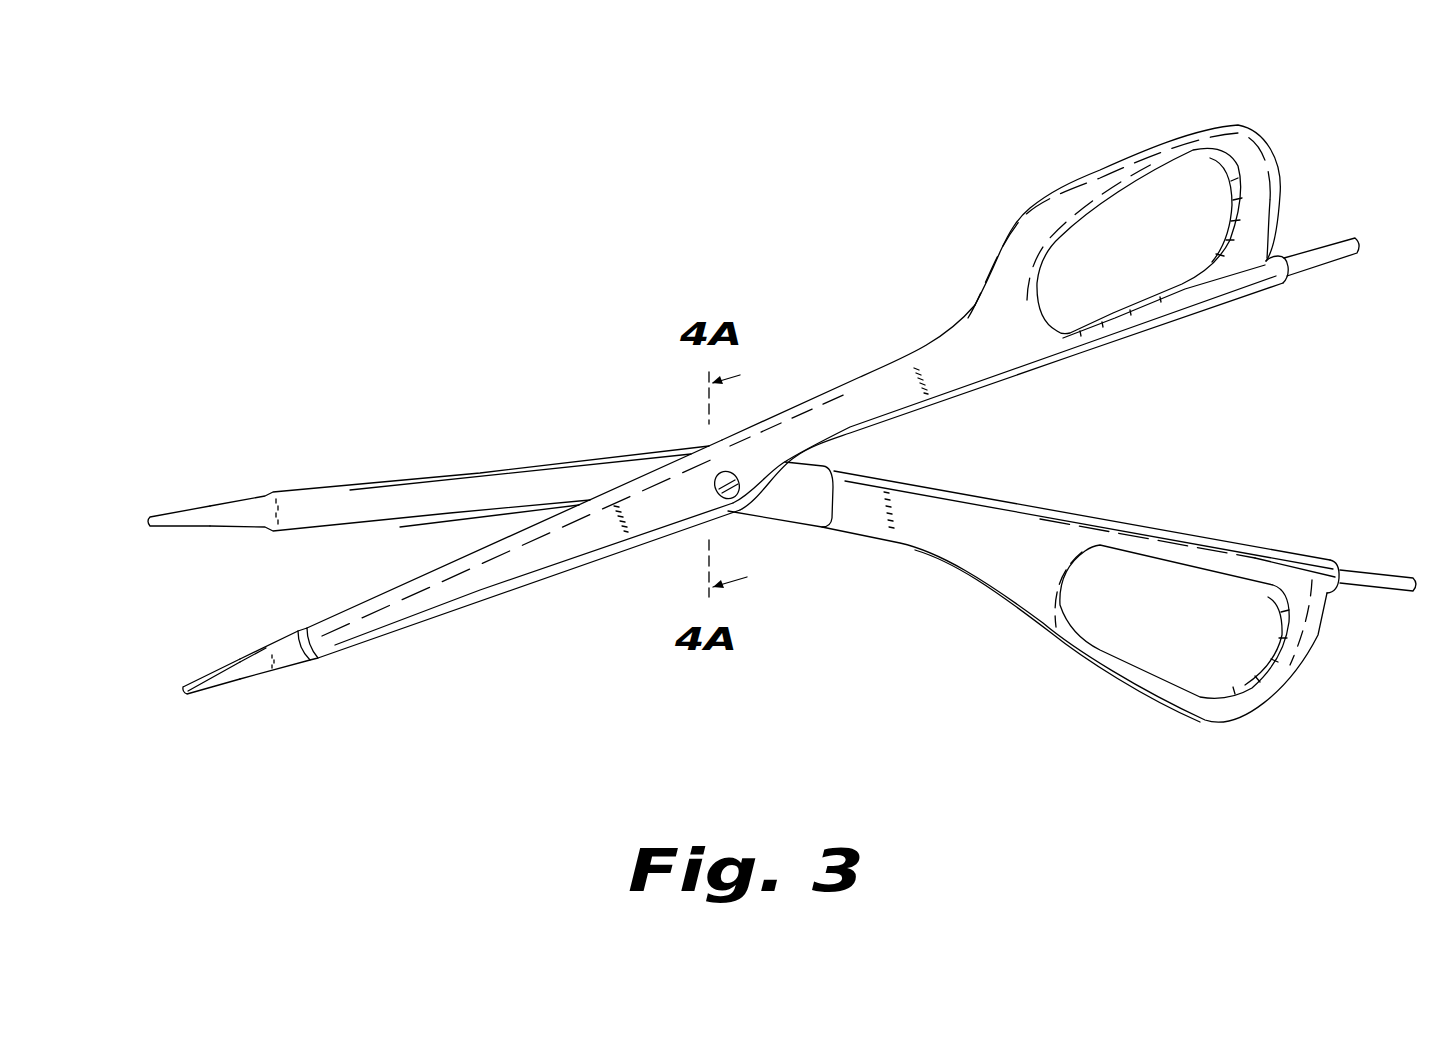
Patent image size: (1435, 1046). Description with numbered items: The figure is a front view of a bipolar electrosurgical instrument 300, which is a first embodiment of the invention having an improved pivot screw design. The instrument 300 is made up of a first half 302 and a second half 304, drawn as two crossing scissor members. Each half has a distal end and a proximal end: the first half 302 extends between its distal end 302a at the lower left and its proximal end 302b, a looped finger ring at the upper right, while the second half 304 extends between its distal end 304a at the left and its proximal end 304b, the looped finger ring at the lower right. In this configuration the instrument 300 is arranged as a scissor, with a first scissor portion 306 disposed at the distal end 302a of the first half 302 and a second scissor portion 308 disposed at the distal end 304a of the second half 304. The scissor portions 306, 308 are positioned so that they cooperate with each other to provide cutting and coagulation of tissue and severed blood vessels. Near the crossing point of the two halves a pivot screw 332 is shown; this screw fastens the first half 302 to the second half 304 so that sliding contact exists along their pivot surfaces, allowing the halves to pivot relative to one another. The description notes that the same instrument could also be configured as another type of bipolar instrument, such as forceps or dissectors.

The bipolar electrosurgical instrument 300 is at (388, 210).
The first half 302 is at (878, 298).
The distal end of first half 302a is at (262, 720).
The proximal end of first half 302b is at (1156, 110).
The second half 304 is at (889, 620).
The distal end of second half 304a is at (183, 478).
The proximal end of second half 304b is at (1201, 765).
The first scissor portion 306 is at (197, 682).
The second scissor portion 308 is at (168, 523).
The pivot screw 332 is at (714, 484).